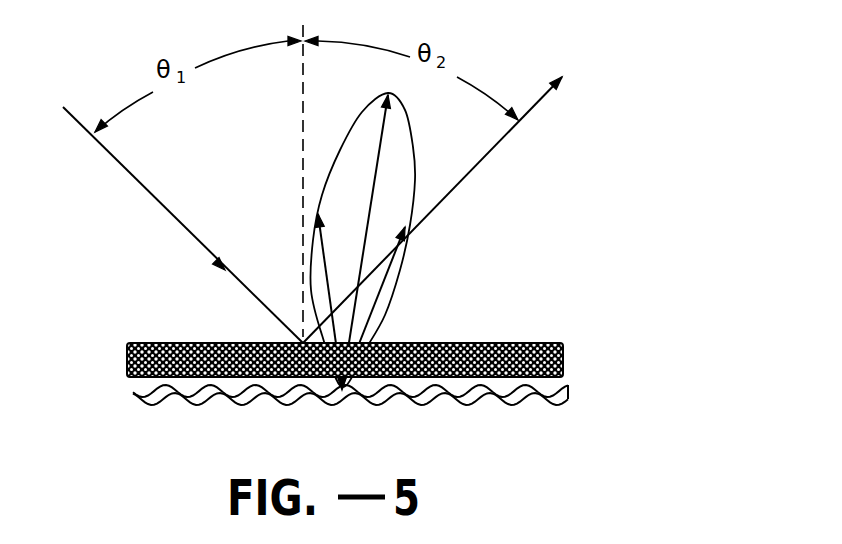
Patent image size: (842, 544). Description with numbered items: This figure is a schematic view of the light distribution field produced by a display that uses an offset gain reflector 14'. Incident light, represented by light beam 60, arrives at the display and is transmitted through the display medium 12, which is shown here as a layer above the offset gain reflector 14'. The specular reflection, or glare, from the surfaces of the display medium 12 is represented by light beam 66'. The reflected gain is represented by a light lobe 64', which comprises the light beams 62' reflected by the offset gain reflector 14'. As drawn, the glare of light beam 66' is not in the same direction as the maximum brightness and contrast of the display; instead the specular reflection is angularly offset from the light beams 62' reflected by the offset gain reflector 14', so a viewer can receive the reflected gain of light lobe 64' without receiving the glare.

The light beam 60 is at (177, 223).
The light beams 62' is at (195, 262).
The light lobe 64' is at (526, 240).
The light beam 66' is at (472, 197).
The display medium 12 is at (533, 343).
The offset gain reflector 14' is at (384, 415).